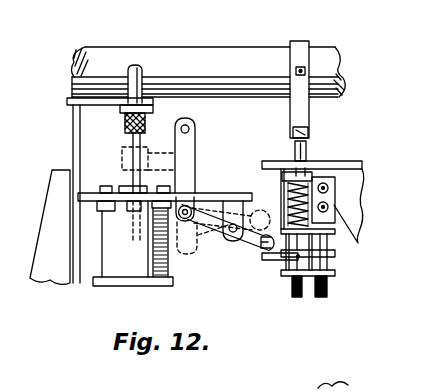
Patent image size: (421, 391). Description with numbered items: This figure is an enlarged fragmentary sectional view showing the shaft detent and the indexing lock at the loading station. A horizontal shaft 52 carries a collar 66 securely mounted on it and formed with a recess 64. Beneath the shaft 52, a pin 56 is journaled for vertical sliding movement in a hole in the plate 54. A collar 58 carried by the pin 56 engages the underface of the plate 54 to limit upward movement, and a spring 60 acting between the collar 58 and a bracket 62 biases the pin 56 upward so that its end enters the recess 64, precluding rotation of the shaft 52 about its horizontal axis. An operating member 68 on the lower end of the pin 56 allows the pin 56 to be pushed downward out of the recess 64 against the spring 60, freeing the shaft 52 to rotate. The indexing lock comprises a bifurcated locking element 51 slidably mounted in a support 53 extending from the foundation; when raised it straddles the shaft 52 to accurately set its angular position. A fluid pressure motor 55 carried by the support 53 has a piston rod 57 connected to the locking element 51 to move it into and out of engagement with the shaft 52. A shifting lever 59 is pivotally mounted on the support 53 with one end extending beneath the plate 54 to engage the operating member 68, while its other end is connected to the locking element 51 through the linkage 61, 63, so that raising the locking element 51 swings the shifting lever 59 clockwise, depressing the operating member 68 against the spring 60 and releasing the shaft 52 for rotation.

The bifurcated locking element 51 is at (133, 65).
The shaft 52 is at (214, 55).
The support 53 is at (77, 128).
The plate 54 is at (268, 161).
The fluid pressure motor 55 is at (163, 266).
The pin 56 is at (307, 153).
The piston rod 57 is at (127, 146).
The collar 58 is at (279, 178).
The shifting lever 59 is at (254, 245).
The spring 60 is at (338, 186).
The linkage 61 is at (188, 140).
The bracket 62 is at (333, 202).
The linkage 63 is at (167, 124).
The recess 64 is at (312, 128).
The collar 66 is at (303, 48).
The operating member 68 is at (268, 261).